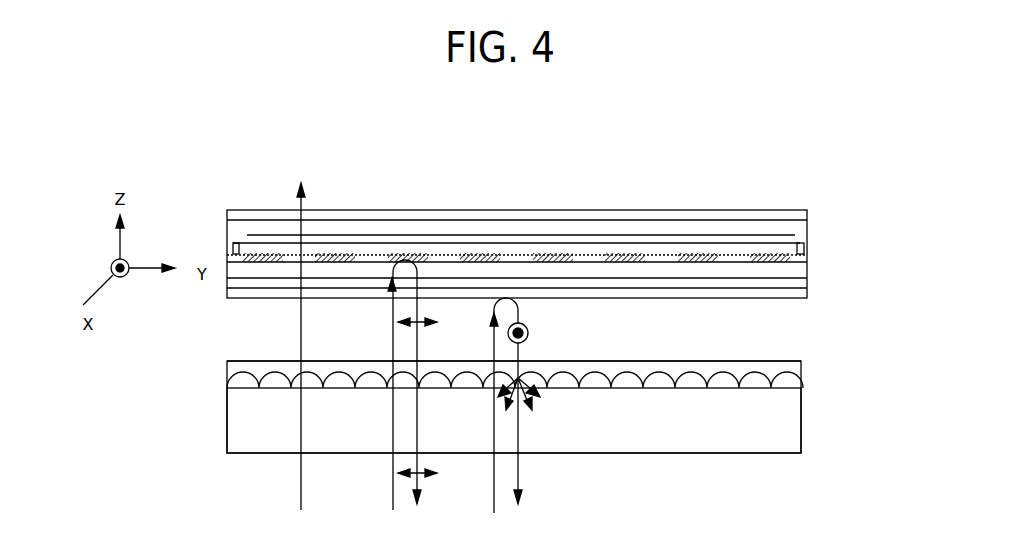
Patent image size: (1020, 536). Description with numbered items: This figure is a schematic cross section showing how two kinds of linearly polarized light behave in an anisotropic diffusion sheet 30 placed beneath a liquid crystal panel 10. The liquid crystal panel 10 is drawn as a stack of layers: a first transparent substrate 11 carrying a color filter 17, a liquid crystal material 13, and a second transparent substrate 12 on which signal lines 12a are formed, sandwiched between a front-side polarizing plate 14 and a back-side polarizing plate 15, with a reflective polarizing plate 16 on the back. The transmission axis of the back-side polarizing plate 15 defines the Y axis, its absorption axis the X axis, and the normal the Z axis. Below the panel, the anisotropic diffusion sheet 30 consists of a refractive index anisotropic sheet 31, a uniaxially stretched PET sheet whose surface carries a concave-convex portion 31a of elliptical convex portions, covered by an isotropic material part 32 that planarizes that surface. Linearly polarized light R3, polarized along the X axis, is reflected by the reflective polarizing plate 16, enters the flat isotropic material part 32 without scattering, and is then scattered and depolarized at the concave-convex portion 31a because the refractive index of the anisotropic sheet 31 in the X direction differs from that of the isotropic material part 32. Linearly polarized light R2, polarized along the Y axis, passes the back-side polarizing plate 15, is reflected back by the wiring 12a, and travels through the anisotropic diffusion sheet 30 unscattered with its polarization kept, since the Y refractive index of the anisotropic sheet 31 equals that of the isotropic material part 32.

The liquid crystal panel 10 is at (898, 147).
The first transparent substrate 11 is at (807, 232).
The second transparent substrate 12 is at (805, 243).
The signal lines 12a is at (625, 257).
The liquid crystal material 13 is at (532, 252).
The front-side polarizing plate 14 is at (807, 210).
The back-side polarizing plate 15 is at (805, 268).
The reflective polarizing plate 16 is at (807, 297).
The color filter 17 is at (415, 237).
The anisotropic diffusion sheet 30 is at (772, 355).
The refractive index anisotropic sheet 31 is at (782, 413).
The concave-convex portion 31a is at (615, 369).
The isotropic material part 32 is at (795, 370).
The linearly polarized light R2 is at (437, 322).
The linearly polarized light R3 is at (527, 327).